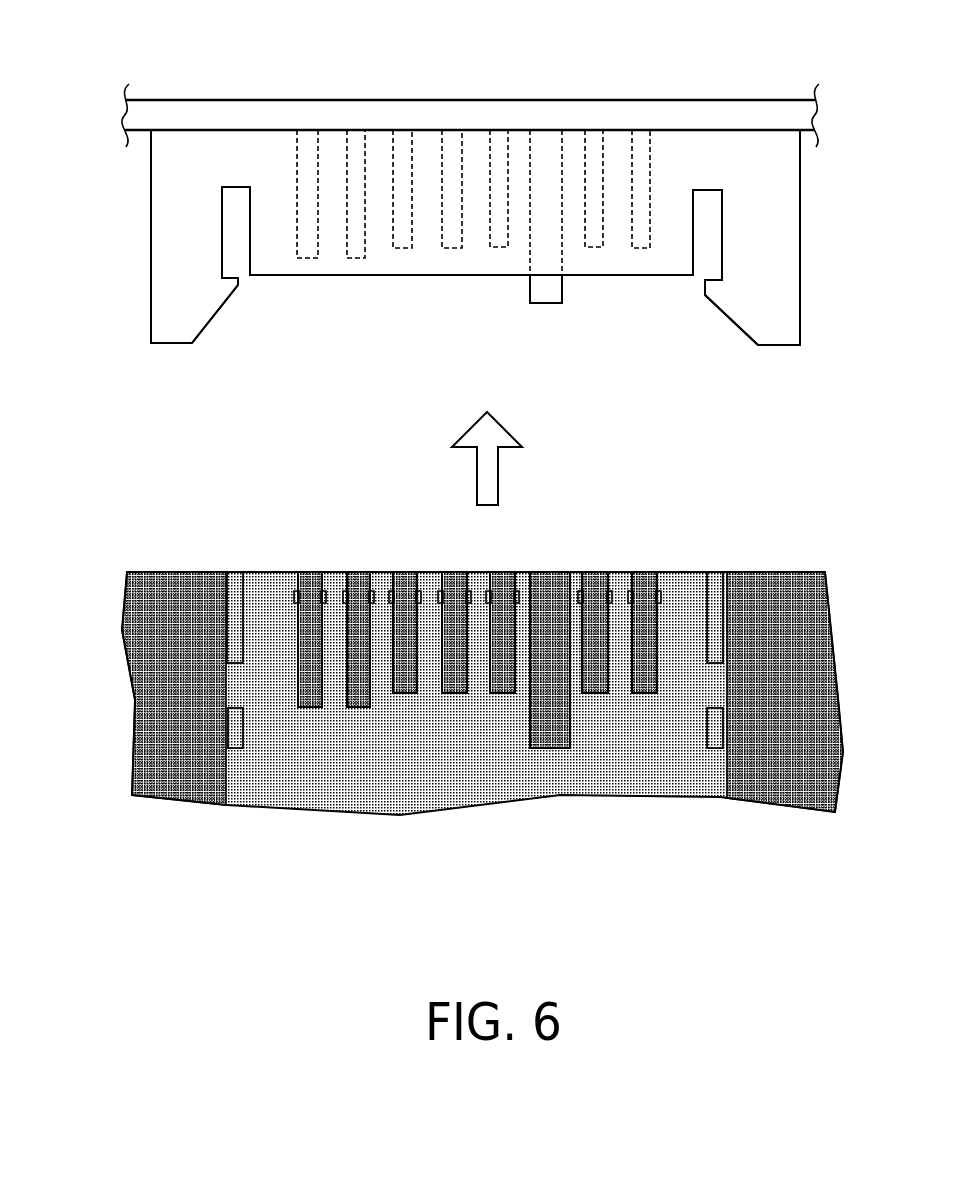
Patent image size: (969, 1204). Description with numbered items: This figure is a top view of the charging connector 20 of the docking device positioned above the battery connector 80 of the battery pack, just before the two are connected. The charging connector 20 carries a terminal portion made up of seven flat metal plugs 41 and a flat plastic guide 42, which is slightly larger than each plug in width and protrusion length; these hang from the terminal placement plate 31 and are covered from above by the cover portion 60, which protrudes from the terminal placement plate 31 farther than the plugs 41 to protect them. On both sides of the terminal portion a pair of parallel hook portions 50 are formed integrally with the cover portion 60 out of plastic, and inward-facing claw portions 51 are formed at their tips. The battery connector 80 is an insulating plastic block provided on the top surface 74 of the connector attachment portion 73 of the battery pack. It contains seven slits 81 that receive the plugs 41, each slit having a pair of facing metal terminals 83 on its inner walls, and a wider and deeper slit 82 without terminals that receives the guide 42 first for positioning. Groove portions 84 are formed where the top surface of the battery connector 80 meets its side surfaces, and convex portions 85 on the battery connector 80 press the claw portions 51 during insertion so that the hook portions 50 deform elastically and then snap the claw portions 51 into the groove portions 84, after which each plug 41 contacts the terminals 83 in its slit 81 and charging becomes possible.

The charging connector 20 is at (126, 196).
The terminal placement plate 31 is at (657, 123).
The plugs 41 is at (297, 217).
The guide 42 is at (530, 178).
The hook portions 50 is at (180, 267).
The claw portions 51 is at (220, 292).
The cover portion 60 is at (377, 153).
The connector attachment portion 73 is at (477, 721).
The top surface 74 is at (165, 800).
The battery connector 80 is at (198, 648).
The slits 81 is at (356, 710).
The slit 82 is at (565, 748).
The terminals 83 is at (301, 595).
The groove portions 84 is at (233, 735).
The convex portions 85 is at (228, 683).